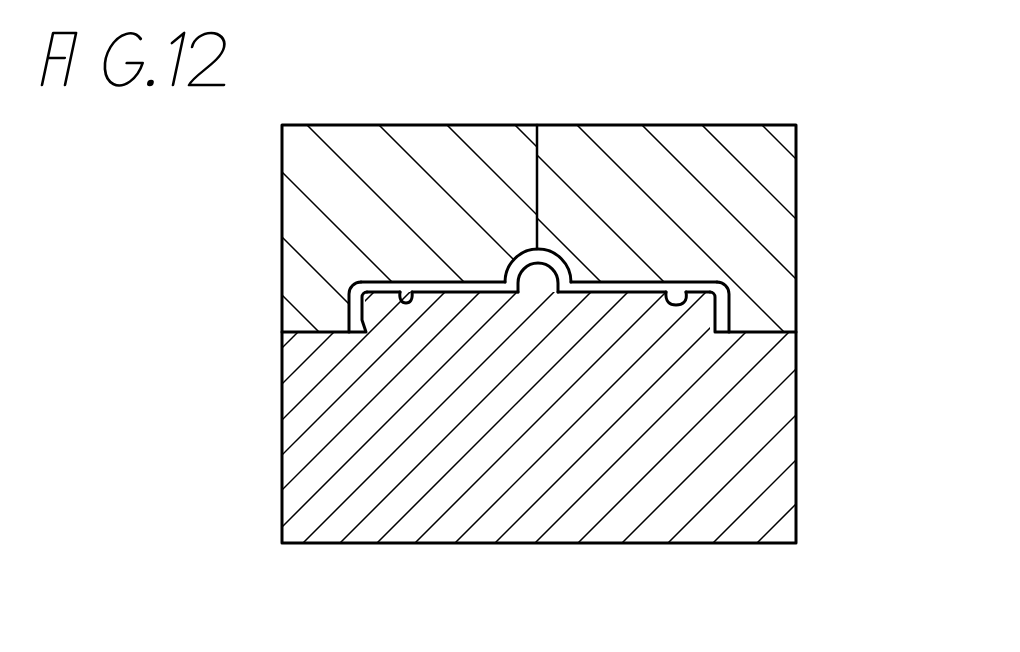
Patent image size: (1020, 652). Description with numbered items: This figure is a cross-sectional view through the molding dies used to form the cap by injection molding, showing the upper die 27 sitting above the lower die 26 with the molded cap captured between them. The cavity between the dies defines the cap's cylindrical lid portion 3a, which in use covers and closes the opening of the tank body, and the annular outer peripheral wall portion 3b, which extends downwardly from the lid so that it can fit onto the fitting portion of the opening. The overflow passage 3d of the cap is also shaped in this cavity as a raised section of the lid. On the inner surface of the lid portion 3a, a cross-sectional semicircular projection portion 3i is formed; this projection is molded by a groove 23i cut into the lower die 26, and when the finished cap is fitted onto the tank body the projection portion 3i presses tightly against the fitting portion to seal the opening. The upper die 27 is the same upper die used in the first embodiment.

The upper die 27 is at (413, 125).
The lower die 26 is at (559, 543).
The lid portion 3a is at (470, 282).
The overflow passage 3d is at (556, 260).
The projection portion 3i is at (407, 298).
The annular outer peripheral wall portion 3b is at (728, 312).
The groove 23i is at (678, 300).